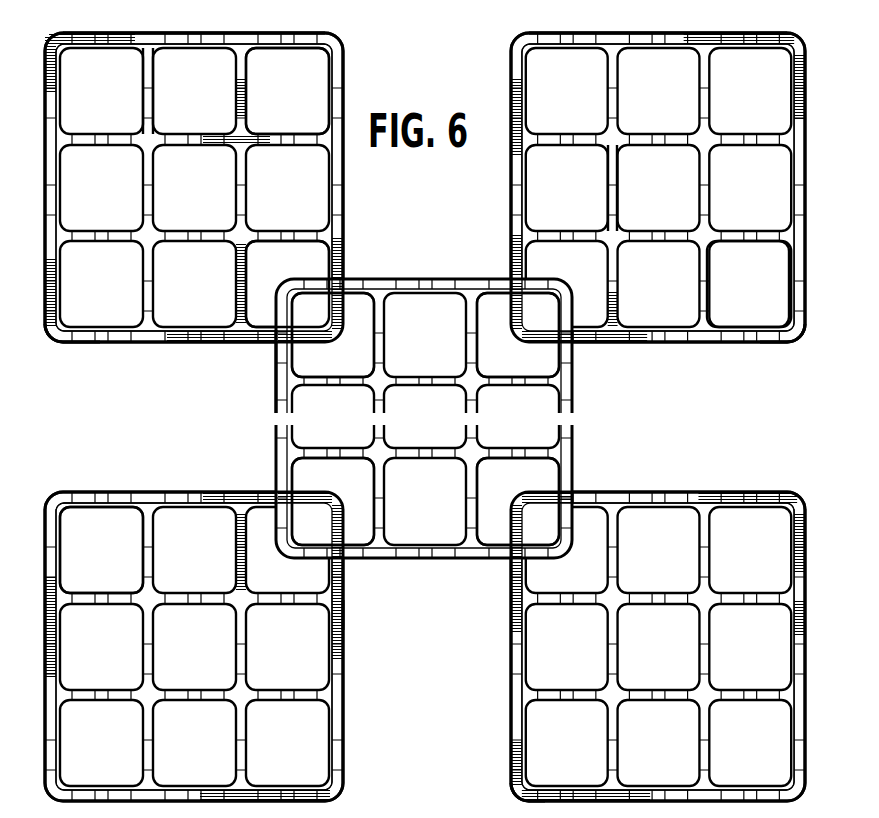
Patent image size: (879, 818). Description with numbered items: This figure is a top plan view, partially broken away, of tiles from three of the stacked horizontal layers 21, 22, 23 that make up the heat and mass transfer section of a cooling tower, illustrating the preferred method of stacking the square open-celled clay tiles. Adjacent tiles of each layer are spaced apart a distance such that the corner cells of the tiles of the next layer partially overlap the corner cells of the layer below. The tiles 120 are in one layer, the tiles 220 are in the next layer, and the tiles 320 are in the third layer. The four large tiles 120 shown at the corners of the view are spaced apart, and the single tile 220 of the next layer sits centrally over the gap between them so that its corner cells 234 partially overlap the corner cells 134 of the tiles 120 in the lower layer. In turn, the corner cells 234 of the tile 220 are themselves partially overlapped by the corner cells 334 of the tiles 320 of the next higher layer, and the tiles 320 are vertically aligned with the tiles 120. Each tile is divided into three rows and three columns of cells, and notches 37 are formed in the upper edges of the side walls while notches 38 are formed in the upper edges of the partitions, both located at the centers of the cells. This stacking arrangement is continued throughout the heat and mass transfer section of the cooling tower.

The horizontal layer 21 is at (803, 737).
The horizontal layer 22 is at (572, 384).
The horizontal layer 23 is at (338, 190).
The notch 37 is at (290, 33).
The notch 38 is at (148, 89).
The tile 120 is at (752, 344).
The corner cell 134 is at (511, 259).
The tile 220 is at (278, 381).
The corner cell 234 is at (365, 279).
The tile 320 is at (90, 342).
The corner cell 334 is at (312, 88).